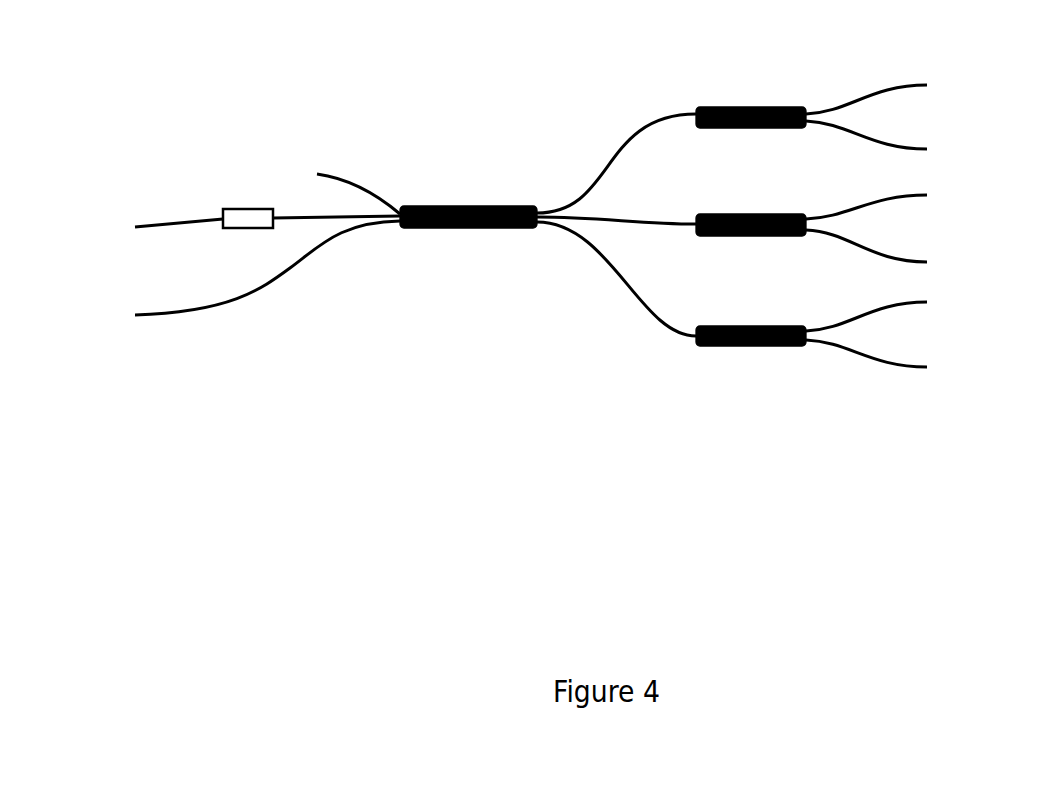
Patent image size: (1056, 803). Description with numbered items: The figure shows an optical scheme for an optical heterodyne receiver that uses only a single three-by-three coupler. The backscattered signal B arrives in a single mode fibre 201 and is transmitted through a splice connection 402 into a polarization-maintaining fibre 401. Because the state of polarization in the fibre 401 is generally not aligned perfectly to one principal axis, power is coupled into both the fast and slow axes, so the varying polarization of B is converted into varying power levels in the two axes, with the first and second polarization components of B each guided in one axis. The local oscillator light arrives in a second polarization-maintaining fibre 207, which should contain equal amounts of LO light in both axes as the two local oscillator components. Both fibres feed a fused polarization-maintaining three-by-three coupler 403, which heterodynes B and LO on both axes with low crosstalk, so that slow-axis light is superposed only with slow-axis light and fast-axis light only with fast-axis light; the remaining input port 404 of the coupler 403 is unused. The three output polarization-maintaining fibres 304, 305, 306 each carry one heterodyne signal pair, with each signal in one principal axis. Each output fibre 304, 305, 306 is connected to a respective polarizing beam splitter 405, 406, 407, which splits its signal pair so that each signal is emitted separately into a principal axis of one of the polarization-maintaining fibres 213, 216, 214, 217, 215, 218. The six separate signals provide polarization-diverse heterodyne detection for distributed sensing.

The single mode fibre 201 is at (170, 217).
The splice connection 402 is at (247, 203).
The polarization-maintaining fibre 401 is at (308, 212).
The input port 404 is at (353, 180).
The polarization-maintaining fibre 207 is at (272, 283).
The fused PMF 3×3 coupler 403 is at (462, 202).
The output PMF 304 is at (600, 175).
The output PMF 305 is at (635, 215).
The output PMF 306 is at (588, 252).
The polarizing beam splitter 405 is at (760, 103).
The polarizing beam splitter 406 is at (760, 212).
The polarizing beam splitter 407 is at (760, 322).
The output PMF 213 is at (918, 92).
The output PMF 216 is at (918, 156).
The output PMF 214 is at (918, 203).
The output PMF 217 is at (918, 269).
The output PMF 215 is at (918, 311).
The output PMF 218 is at (918, 375).